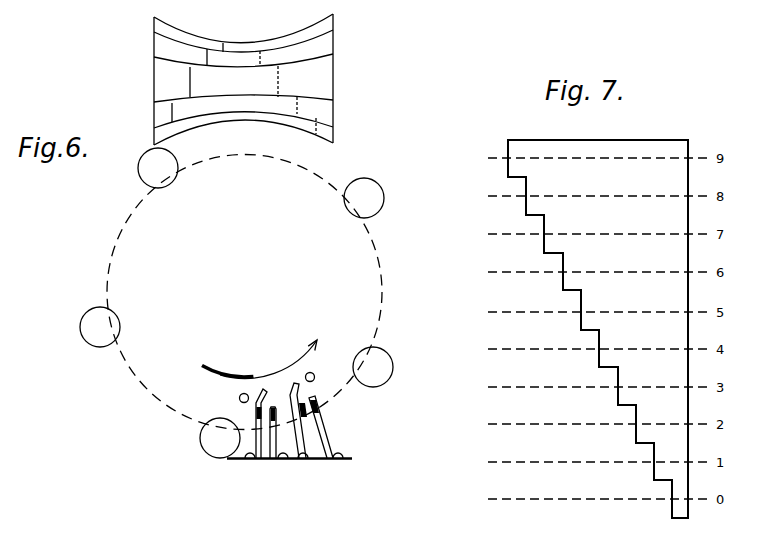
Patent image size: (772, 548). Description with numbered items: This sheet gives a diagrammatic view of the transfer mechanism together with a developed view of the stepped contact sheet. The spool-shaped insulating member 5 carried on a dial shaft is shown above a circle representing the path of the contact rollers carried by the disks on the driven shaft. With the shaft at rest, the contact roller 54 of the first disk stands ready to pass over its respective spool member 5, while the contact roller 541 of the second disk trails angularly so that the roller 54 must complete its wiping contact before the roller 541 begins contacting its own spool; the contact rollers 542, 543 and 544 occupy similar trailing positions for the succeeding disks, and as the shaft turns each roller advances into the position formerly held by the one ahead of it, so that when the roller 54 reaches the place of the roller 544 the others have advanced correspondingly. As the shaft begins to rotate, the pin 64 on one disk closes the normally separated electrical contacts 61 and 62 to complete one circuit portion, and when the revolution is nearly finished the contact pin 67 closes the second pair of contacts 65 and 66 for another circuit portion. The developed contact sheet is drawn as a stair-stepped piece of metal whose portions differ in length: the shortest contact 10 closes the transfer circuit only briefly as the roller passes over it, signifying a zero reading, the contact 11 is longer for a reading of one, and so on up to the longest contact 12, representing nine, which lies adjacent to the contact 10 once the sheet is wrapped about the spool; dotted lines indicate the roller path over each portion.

In FIG. 6, the insulating member 5 is at (241, 50).
In FIG. 6, the contact roller 54 is at (384, 201).
In FIG. 6, the contact roller 541 is at (391, 364).
In FIG. 6, the contact roller 542 is at (201, 443).
In FIG. 6, the contact roller 543 is at (83, 337).
In FIG. 6, the contact roller 544 is at (138, 171).
In FIG. 6, the electrical contact 61 is at (257, 438).
In FIG. 6, the electrical contact 62 is at (271, 441).
In FIG. 6, the pin 64 is at (239, 397).
In FIG. 6, the contact 65 is at (306, 434).
In FIG. 6, the contact 66 is at (327, 435).
In FIG. 6, the contact pin 67 is at (313, 373).
In FIG. 7, the contact 10 is at (675, 508).
In FIG. 7, the contact 11 is at (656, 470).
In FIG. 7, the contact 12 is at (508, 150).